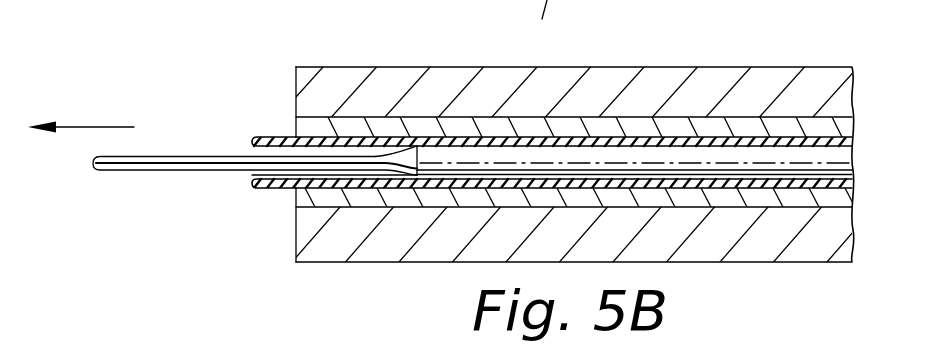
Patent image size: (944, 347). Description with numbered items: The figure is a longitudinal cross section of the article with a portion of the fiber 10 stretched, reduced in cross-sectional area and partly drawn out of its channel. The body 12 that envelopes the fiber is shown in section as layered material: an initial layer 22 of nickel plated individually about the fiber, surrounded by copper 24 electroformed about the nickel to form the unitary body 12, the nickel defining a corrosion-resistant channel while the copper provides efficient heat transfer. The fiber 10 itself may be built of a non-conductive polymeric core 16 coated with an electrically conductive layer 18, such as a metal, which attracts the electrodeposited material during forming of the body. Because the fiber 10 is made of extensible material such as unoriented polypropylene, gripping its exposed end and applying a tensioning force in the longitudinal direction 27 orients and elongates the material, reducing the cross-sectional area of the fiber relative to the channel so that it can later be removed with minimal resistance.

The fiber 10 is at (266, 195).
The body 12 is at (728, 66).
The core 16 is at (133, 171).
The electrically conductive layer 18 is at (248, 142).
The initial layer 22 is at (459, 125).
The copper 24 is at (338, 82).
The longitudinal direction 27 is at (70, 127).